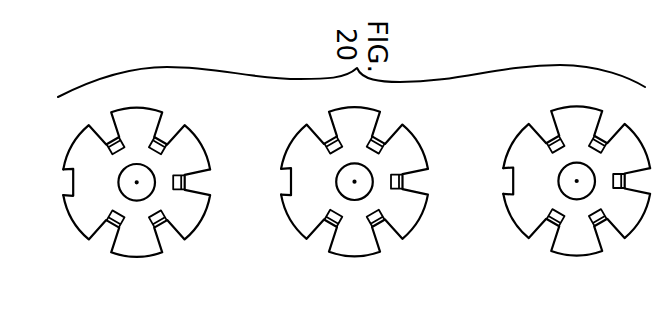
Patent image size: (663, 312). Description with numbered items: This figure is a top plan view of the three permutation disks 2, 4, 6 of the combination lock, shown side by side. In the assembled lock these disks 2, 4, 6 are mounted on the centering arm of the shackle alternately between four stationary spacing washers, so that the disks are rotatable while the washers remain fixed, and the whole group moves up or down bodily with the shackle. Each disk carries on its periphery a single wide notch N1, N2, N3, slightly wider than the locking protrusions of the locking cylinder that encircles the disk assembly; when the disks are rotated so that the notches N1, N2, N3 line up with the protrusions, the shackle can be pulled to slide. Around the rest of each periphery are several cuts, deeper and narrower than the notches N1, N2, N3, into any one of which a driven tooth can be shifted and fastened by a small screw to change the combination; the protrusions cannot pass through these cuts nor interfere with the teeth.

The permutation disk 2 is at (121, 195).
The permutation disk 4 is at (339, 195).
The permutation disk 6 is at (562, 193).
The notch N1 is at (494, 184).
The notch N2 is at (283, 180).
The notch N3 is at (53, 189).